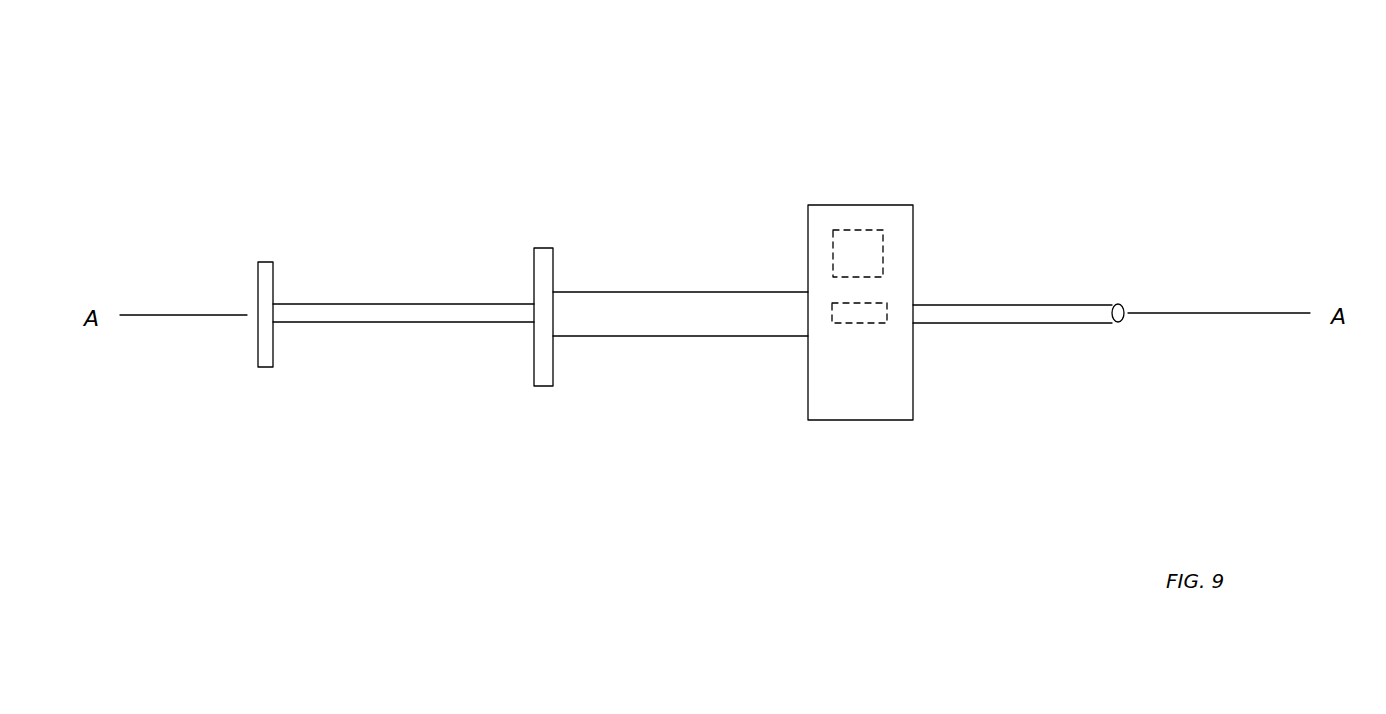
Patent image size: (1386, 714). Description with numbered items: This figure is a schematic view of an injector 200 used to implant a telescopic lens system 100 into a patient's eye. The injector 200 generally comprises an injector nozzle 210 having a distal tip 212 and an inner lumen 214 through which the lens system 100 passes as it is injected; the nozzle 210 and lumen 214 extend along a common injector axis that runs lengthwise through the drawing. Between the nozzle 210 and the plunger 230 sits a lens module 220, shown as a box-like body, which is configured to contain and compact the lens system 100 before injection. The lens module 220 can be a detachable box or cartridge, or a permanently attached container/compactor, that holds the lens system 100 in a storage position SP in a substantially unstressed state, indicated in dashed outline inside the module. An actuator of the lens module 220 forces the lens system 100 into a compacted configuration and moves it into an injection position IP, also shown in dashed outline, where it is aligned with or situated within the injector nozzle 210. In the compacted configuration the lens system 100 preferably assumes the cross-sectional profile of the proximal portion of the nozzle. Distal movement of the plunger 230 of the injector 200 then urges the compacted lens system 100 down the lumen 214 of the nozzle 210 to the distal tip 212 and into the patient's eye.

The lens system 100 is at (833, 232).
The injector 200 is at (961, 151).
The injector nozzle 210 is at (1035, 313).
The distal tip 212 is at (1118, 303).
The inner lumen 214 is at (1125, 317).
The lens module 220 is at (878, 412).
The plunger 230 is at (423, 314).
The storage position SP is at (890, 252).
The injection position IP is at (863, 326).